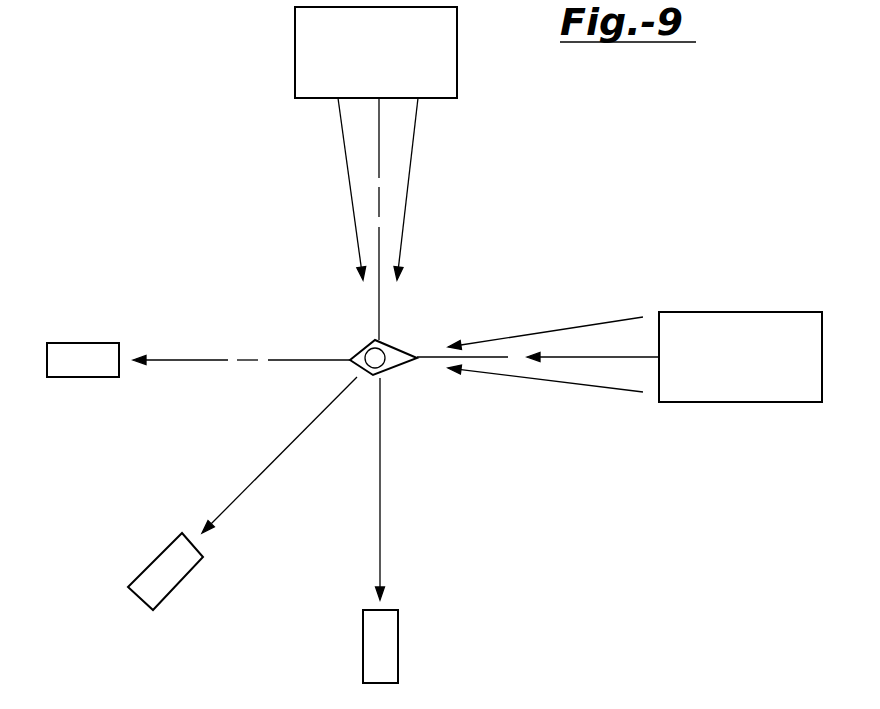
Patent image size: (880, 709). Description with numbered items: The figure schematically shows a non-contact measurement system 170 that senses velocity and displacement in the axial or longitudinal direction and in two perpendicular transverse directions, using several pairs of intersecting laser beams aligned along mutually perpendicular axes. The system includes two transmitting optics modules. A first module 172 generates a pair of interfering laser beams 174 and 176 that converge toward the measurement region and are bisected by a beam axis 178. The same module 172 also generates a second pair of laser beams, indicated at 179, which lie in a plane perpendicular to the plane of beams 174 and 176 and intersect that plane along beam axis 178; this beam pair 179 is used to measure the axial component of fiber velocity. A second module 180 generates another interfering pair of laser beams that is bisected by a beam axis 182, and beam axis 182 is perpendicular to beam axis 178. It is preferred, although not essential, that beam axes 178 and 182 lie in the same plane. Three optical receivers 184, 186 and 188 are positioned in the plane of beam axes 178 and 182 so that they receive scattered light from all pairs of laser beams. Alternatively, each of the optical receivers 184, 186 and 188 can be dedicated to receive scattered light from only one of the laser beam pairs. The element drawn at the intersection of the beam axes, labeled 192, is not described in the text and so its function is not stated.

The measurement system 170 is at (238, 184).
The transmitting optics module 172 is at (783, 312).
The laser beam 174 is at (558, 330).
The laser beam 176 is at (545, 382).
The beam axis 178 is at (180, 360).
The pair of laser beams 179 is at (593, 357).
The transmitting optics module 180 is at (458, 32).
The beam axis 182 is at (380, 307).
The optical receiver 184 is at (62, 343).
The optical receiver 186 is at (138, 575).
The optical receiver 188 is at (398, 668).
The beam splitter 192 is at (387, 360).